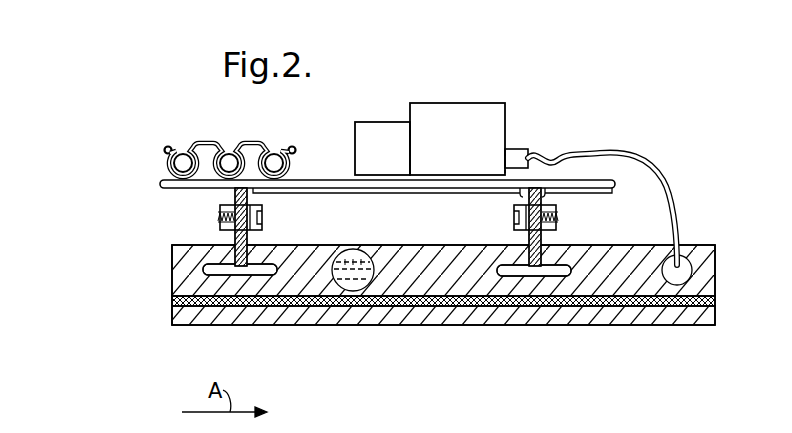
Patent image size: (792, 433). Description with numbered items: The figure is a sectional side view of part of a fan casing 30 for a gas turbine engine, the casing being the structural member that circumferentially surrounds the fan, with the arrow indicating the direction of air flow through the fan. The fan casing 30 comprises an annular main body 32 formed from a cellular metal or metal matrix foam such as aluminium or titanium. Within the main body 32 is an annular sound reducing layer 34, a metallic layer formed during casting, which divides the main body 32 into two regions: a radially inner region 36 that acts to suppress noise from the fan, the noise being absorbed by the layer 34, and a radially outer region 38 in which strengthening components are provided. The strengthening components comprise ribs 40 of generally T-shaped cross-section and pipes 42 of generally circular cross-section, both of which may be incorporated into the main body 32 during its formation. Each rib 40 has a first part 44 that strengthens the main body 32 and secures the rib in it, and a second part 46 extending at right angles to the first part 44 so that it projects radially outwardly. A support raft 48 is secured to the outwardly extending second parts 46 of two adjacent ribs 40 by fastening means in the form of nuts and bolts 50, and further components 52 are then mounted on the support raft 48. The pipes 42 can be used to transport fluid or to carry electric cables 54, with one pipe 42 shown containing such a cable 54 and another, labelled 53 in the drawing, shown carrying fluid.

The fan casing 30 is at (421, 338).
The annular main body 32 is at (468, 314).
The annular sound reducing layer 34 is at (688, 320).
The radially inner region 36 is at (632, 322).
The radially outer region 38 is at (708, 276).
The ribs 40 is at (267, 284).
The pipes 42 is at (361, 251).
The first part 44 is at (210, 276).
The second part 46 is at (237, 243).
The support raft 48 is at (160, 186).
The nuts and bolts 50 is at (263, 211).
The further components 52 is at (208, 145).
The fluid 53 is at (347, 290).
The electric cables 54 is at (656, 165).